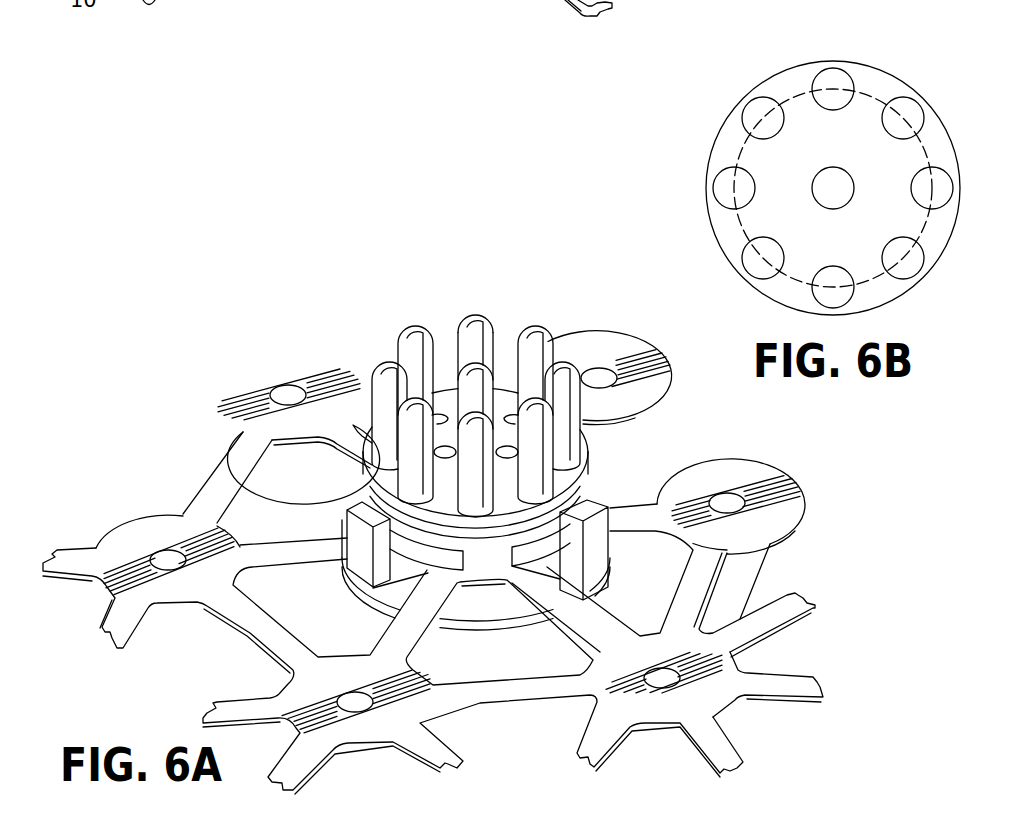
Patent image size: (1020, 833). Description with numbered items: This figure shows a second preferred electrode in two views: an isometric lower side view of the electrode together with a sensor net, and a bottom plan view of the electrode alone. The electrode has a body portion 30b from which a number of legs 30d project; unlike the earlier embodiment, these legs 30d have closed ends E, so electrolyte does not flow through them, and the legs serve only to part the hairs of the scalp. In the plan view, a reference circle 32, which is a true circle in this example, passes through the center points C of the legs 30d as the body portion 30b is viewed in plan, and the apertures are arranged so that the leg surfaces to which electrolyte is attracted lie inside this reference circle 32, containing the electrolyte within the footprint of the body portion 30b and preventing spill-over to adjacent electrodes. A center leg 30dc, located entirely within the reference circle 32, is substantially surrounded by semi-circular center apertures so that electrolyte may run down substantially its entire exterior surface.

In FIG. 6B, the body portion 30b is at (714, 121).
In FIG. 6B, the reference circle 32 is at (792, 97).
In FIG. 6B, the center points of the legs C is at (833, 66).
In FIG. 6B, the legs 30d is at (898, 97).
In FIG. 6A, the legs 30d is at (492, 318).
In FIG. 6B, the center leg 30dc is at (813, 176).
In FIG. 6A, the center leg 30dc is at (477, 362).
In FIG. 6A, the closed ends E is at (477, 314).